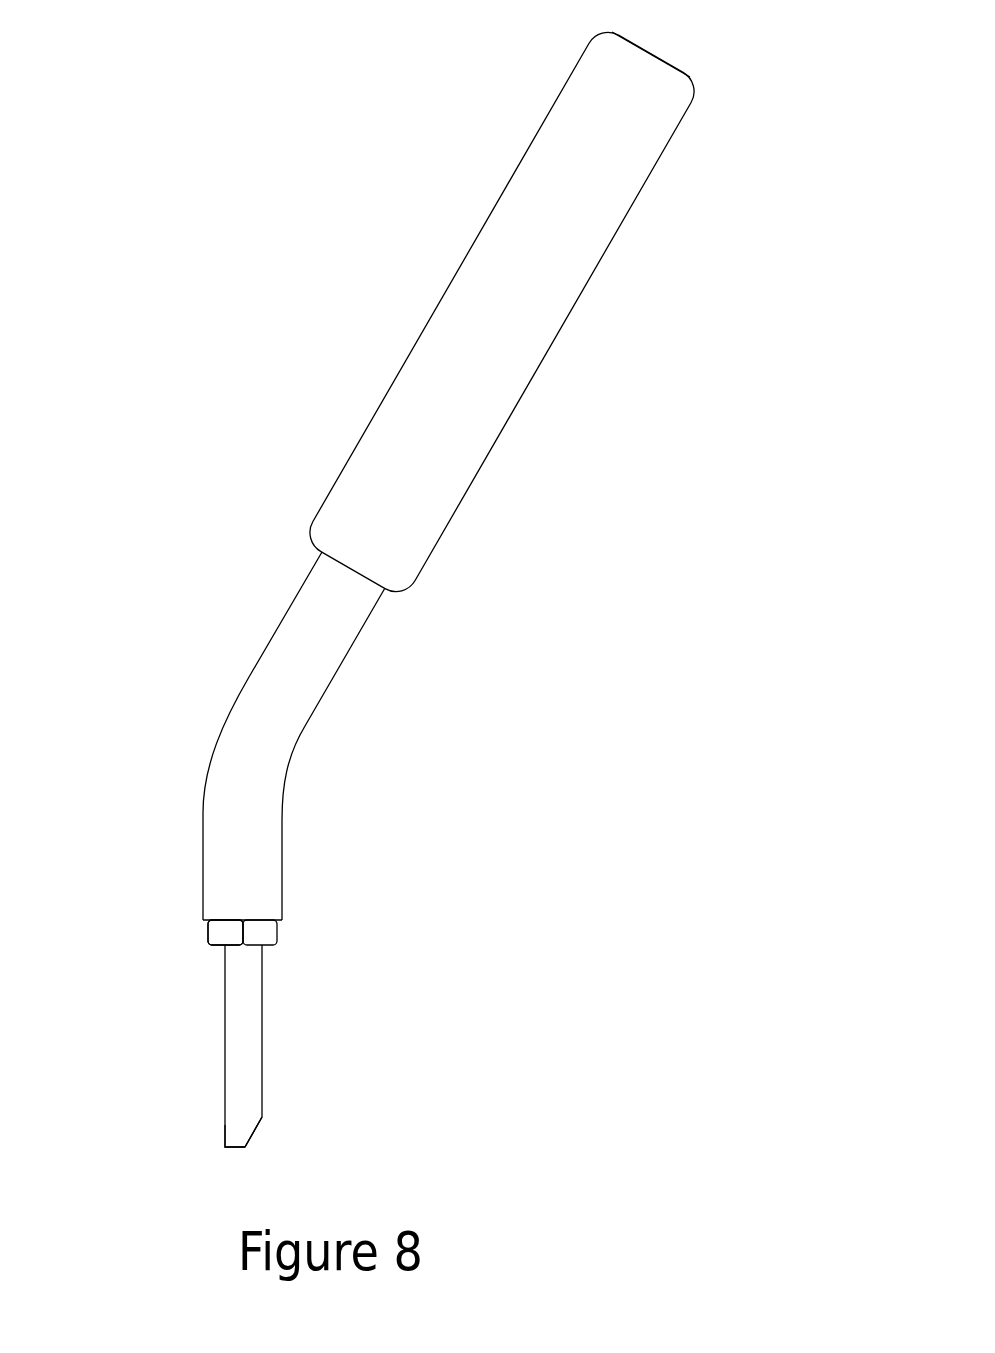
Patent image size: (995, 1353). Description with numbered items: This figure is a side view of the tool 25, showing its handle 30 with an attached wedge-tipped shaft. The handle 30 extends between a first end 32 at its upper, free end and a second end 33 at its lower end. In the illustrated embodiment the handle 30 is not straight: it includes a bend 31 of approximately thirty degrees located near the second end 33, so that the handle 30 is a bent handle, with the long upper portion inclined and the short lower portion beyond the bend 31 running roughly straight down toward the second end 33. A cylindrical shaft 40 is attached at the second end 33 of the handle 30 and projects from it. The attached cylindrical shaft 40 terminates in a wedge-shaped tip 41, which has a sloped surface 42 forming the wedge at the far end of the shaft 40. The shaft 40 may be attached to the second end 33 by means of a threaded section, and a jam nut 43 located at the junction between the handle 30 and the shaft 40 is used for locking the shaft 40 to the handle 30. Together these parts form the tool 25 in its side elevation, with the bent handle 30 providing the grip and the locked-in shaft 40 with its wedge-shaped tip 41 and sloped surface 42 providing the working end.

The tool 25 is at (412, 595).
The handle 30 is at (347, 462).
The bend 31 is at (298, 748).
The first end 32 is at (637, 43).
The second end 33 is at (282, 922).
The cylindrical shaft 40 is at (225, 1043).
The wedge-shaped tip 41 is at (225, 1135).
The sloped surface 42 is at (252, 1133).
The jam nut 43 is at (208, 935).